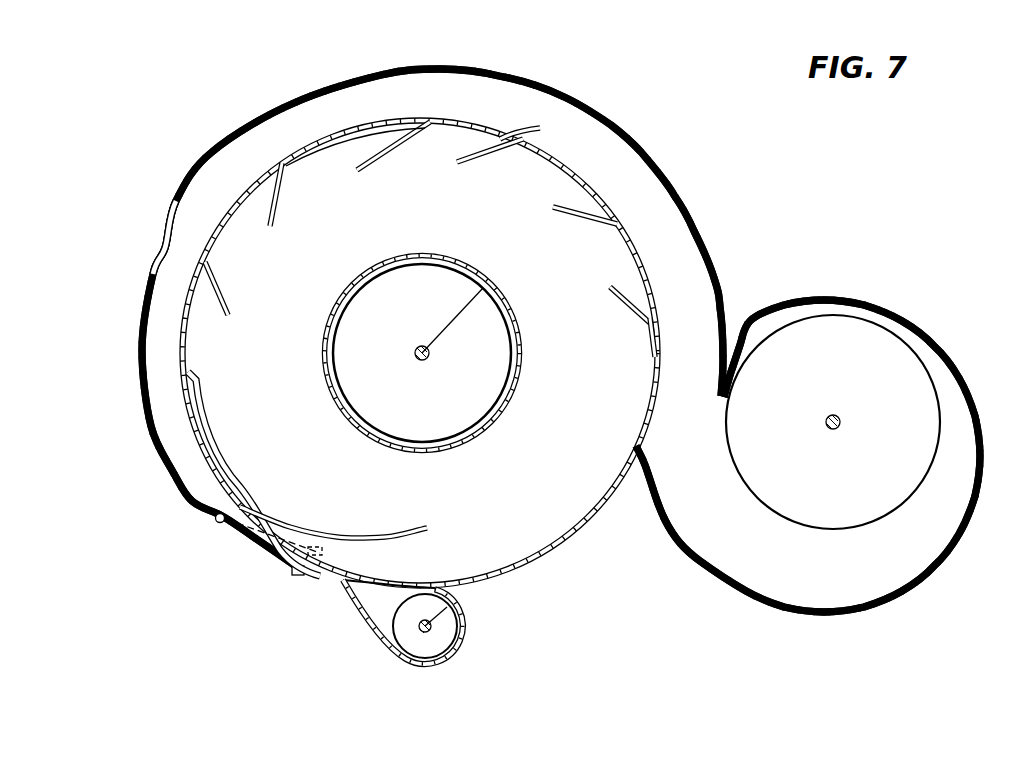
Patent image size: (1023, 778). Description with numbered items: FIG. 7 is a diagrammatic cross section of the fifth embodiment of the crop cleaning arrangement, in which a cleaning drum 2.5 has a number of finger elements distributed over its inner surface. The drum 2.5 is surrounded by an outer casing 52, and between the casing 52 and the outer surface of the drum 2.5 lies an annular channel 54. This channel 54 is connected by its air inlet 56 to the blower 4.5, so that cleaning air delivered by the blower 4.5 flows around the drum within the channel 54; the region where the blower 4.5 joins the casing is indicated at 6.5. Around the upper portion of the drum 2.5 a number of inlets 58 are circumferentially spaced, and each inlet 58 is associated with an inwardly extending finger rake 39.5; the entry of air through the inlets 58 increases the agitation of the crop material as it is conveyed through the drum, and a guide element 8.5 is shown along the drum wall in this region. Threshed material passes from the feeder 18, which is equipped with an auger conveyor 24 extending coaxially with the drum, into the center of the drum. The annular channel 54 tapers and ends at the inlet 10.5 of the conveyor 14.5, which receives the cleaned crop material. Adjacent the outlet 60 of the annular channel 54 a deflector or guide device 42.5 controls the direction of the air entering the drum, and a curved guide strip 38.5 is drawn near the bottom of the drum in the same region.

The outer casing 52 is at (293, 100).
The annular channel 54 is at (183, 247).
The air inlet 56 is at (446, 353).
The inlets 58 is at (657, 330).
The outlet 60 is at (200, 473).
The right chamber wall junction 6.5 is at (730, 357).
The blower 4.5 is at (955, 341).
The feeder 18 is at (388, 253).
The auger conveyor 24 is at (422, 353).
The finger rake 39.5 is at (233, 306).
The guide plate 8.5 is at (343, 142).
The cleaning drum 2.5 is at (528, 139).
The deflector or guide device 42.5 is at (297, 547).
The curved guide strip 38.5 is at (386, 528).
The inlet 10.5 is at (415, 583).
The conveyor 14.5 is at (463, 638).